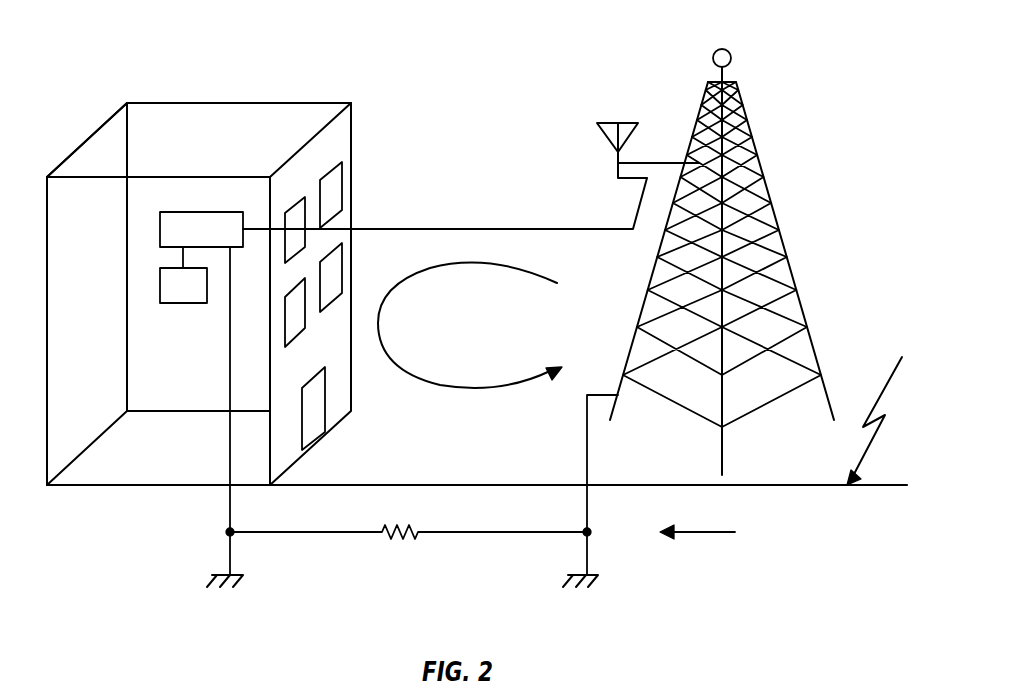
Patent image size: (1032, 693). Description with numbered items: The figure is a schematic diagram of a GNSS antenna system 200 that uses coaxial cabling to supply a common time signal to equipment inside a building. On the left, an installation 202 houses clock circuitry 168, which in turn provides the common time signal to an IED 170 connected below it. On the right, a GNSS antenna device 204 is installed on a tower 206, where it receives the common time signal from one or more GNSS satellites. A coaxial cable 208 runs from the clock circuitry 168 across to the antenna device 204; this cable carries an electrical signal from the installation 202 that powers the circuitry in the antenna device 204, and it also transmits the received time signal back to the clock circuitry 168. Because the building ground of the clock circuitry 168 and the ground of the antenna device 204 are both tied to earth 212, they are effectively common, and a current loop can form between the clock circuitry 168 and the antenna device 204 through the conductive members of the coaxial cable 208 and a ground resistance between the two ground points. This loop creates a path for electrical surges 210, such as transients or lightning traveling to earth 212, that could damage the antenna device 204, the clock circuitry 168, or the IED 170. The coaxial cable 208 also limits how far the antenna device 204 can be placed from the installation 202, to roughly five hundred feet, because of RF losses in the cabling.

The GNSS antenna system 200 is at (773, 37).
The installation 202 is at (238, 103).
The GNSS antenna device 204 is at (613, 123).
The tower 206 is at (777, 241).
The coaxial cable 208 is at (460, 232).
The electrical surges 210 is at (887, 383).
The earth 212 is at (775, 486).
The clock circuitry 168 is at (202, 212).
The IED 170 is at (183, 304).